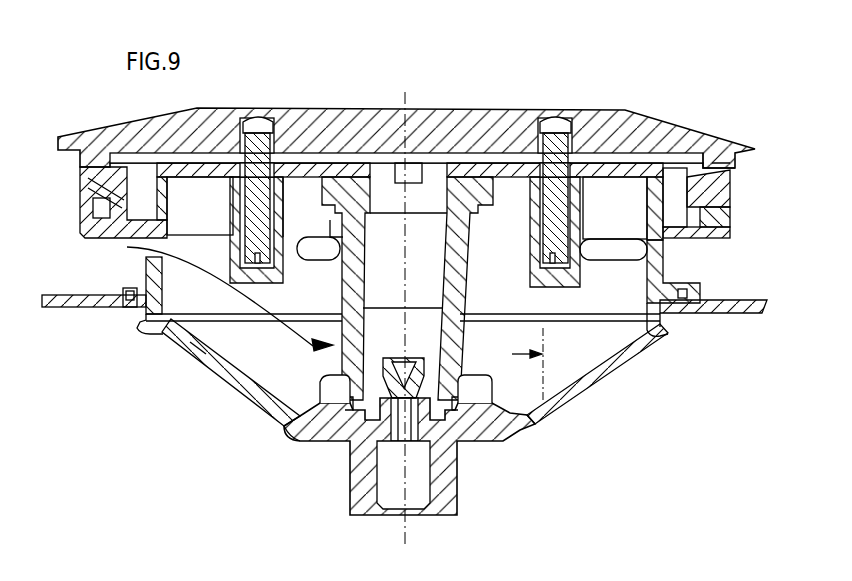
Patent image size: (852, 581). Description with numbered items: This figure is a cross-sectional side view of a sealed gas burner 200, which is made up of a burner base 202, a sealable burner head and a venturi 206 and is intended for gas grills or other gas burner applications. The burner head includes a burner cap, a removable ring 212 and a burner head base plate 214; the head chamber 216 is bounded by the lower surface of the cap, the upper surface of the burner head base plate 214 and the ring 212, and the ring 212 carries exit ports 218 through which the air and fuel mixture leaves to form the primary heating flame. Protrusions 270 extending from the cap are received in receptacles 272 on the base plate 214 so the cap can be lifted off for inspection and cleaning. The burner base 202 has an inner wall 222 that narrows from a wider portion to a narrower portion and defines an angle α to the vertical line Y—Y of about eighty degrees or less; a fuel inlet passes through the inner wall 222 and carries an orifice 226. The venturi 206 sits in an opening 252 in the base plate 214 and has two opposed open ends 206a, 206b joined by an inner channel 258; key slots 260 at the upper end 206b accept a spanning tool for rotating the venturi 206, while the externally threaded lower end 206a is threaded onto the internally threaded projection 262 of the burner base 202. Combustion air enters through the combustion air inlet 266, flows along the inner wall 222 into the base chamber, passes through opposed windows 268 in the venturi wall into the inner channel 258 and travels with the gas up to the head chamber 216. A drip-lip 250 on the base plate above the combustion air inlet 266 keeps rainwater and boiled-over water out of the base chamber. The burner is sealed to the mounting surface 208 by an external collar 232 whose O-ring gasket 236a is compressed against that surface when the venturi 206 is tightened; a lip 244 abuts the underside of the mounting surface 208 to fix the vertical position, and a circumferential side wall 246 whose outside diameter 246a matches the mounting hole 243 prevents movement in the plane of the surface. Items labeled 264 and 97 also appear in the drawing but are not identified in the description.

The sealed gas burner 200 is at (414, 303).
The burner base 202 is at (399, 388).
The venturi 206 is at (340, 290).
The lower open end of the venturi 206a is at (460, 441).
The upper open end of the venturi 206b is at (432, 172).
The mounting surface 208 is at (757, 313).
The removable ring 212 is at (732, 185).
The burner head base plate 214 is at (663, 262).
The head chamber 216 is at (505, 158).
The exit ports 218 is at (95, 172).
The inner wall 222 is at (217, 366).
The orifice 226 is at (343, 445).
The external collar 232 is at (145, 290).
The O-ring gasket 236a is at (133, 315).
The mounting hole 243 is at (193, 352).
The lip 244 is at (662, 326).
The circumferential side wall portion 246 is at (165, 303).
The outside diameter 246a is at (658, 330).
The drip-lip 250 is at (736, 236).
The opening 252 is at (487, 172).
The inner channel 258 is at (427, 294).
The key slots 260 is at (400, 163).
The projection 262 is at (274, 447).
The chamber 264 is at (652, 187).
The combustion air inlet 266 is at (615, 252).
The windows 268 is at (453, 355).
The protrusions 270 is at (262, 165).
The receptacles 272 is at (236, 205).
The cap edge 97 is at (706, 168).